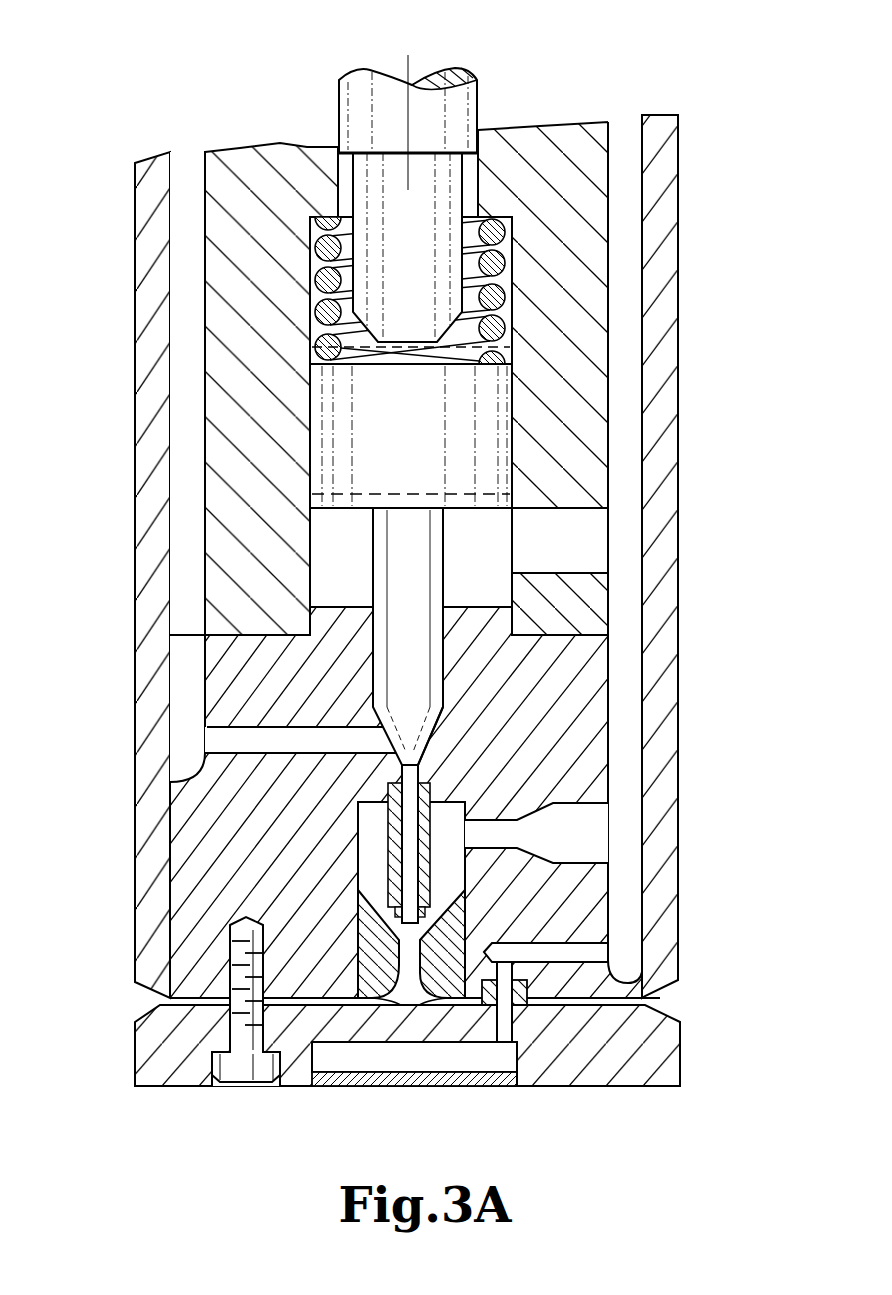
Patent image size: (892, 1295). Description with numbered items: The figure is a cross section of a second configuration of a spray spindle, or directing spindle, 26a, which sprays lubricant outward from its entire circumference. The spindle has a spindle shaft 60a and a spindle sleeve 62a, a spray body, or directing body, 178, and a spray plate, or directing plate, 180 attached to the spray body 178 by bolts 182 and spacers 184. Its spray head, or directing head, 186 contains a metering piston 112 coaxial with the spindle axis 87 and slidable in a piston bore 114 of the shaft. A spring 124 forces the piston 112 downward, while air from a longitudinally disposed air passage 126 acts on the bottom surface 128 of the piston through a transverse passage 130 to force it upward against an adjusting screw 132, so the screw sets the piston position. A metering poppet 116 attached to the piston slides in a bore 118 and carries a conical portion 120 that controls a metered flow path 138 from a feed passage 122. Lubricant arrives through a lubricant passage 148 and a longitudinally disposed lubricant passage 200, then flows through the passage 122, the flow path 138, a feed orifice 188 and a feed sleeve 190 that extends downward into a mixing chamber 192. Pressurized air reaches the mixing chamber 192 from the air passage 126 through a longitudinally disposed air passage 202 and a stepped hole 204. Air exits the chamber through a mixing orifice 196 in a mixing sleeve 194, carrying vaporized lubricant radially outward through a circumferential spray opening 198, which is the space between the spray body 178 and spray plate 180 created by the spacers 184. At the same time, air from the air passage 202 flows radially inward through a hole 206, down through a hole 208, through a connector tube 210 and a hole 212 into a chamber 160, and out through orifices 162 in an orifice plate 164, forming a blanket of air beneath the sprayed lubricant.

The spray spindle 26a is at (218, 58).
The spindle sleeve 62a is at (147, 138).
The spindle shaft 60a is at (235, 135).
The spindle axis 87 is at (408, 55).
The adjusting screw 132 is at (478, 104).
The lubricant passage 148 is at (185, 209).
The air passage 126 is at (627, 217).
The spring 124 is at (348, 262).
The piston bore 114 is at (313, 430).
The metering piston 112 is at (387, 431).
The metering poppet 116 is at (374, 552).
The bottom surface 128 is at (465, 512).
The transverse passage 130 is at (597, 543).
The bore 118 is at (375, 674).
The conical portion 120 is at (443, 714).
The feed passage 122 is at (240, 742).
The lubricant passage 200 is at (185, 668).
The air passage 202 is at (632, 676).
The flow path 138 is at (403, 767).
The feed orifice 188 is at (420, 771).
The stepped hole 204 is at (588, 818).
The feed sleeve 190 is at (388, 812).
The mixing chamber 192 is at (372, 848).
The mixing orifice 196 is at (366, 896).
The mixing sleeve 194 is at (360, 953).
The hole 206 is at (590, 947).
The hole 208 is at (512, 966).
The connector tube 210 is at (527, 1022).
The hole 212 is at (526, 1040).
The spray body 178 is at (125, 878).
The circumferential spray opening 198 is at (695, 996).
The spray head 186 is at (698, 1099).
The spacers 184 is at (222, 1008).
The spray plate 180 is at (137, 1040).
The bolts 182 is at (250, 1087).
The chamber 160 is at (399, 1068).
The orifices 162 is at (428, 1087).
The orifice plate 164 is at (497, 1087).